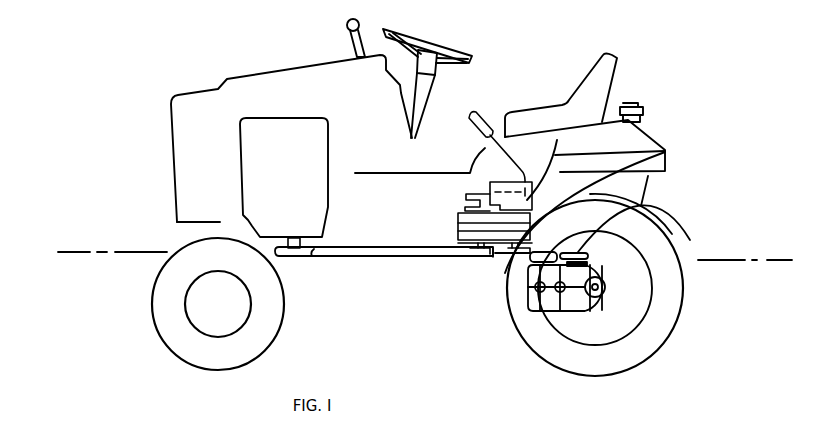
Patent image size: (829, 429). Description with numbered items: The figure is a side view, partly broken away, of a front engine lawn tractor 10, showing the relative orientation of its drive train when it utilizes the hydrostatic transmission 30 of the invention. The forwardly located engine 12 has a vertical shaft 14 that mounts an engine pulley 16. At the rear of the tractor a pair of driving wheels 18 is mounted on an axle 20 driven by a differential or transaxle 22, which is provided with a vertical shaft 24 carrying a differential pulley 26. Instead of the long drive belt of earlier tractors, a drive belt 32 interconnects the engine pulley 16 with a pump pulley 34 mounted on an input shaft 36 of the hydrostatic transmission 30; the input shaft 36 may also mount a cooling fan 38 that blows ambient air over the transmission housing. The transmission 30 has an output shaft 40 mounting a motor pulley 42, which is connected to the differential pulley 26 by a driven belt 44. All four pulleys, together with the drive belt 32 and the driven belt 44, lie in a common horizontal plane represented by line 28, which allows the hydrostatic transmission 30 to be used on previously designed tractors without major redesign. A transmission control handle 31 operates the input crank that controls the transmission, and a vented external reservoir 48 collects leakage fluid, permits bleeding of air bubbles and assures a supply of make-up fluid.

The front engine lawn tractor 10 is at (694, 99).
The engine 12 is at (297, 173).
The vertical shaft 14 is at (303, 242).
The engine pulley 16 is at (298, 258).
The driving wheels 18 is at (562, 350).
The axle 20 is at (603, 287).
The differential or transaxle 22 is at (632, 335).
The vertical shaft 24 is at (638, 250).
The differential pulley 26 is at (641, 206).
The horizontal plane 28 is at (425, 246).
The hydrostatic transmission 30 is at (457, 212).
The transmission control handle 31 is at (498, 138).
The drive belt 32 is at (382, 258).
The pump pulley 34 is at (488, 258).
The input shaft 36 is at (473, 260).
The cooling fan 38 is at (458, 245).
The output shaft 40 is at (537, 250).
The motor pulley 42 is at (513, 260).
The driven belt 44 is at (662, 151).
The reservoir 48 is at (556, 138).